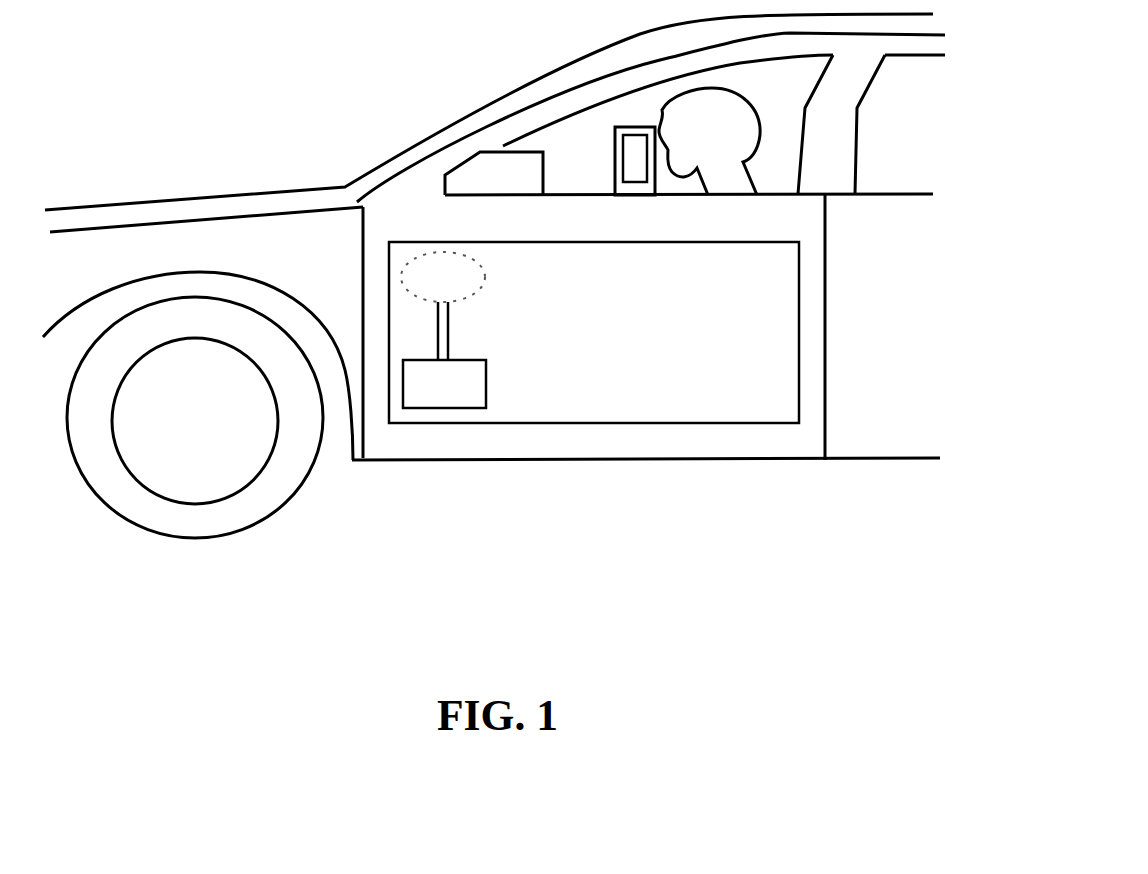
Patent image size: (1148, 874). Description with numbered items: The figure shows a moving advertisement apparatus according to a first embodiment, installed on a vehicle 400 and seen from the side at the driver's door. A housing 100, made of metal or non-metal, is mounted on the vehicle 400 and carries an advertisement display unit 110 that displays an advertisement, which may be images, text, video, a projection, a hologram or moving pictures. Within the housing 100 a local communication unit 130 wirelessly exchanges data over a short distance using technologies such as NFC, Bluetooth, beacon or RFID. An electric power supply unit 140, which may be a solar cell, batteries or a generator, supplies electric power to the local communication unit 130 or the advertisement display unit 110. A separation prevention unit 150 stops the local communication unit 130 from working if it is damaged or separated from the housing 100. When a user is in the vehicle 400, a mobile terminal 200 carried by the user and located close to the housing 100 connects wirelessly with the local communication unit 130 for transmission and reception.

The housing 100 is at (618, 388).
The advertisement display unit 110 is at (702, 352).
The local communication unit 130 is at (442, 390).
The electric power supply unit 140 is at (420, 252).
The separation prevention unit 150 is at (457, 333).
The mobile terminal 200 is at (600, 128).
The vehicle 400 is at (283, 236).